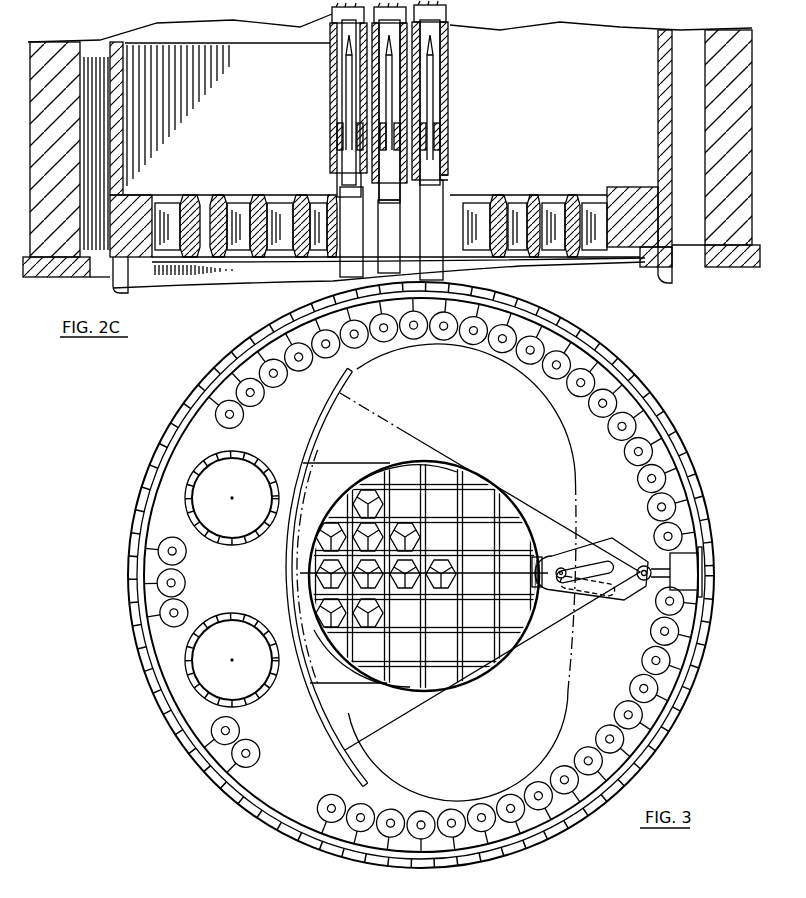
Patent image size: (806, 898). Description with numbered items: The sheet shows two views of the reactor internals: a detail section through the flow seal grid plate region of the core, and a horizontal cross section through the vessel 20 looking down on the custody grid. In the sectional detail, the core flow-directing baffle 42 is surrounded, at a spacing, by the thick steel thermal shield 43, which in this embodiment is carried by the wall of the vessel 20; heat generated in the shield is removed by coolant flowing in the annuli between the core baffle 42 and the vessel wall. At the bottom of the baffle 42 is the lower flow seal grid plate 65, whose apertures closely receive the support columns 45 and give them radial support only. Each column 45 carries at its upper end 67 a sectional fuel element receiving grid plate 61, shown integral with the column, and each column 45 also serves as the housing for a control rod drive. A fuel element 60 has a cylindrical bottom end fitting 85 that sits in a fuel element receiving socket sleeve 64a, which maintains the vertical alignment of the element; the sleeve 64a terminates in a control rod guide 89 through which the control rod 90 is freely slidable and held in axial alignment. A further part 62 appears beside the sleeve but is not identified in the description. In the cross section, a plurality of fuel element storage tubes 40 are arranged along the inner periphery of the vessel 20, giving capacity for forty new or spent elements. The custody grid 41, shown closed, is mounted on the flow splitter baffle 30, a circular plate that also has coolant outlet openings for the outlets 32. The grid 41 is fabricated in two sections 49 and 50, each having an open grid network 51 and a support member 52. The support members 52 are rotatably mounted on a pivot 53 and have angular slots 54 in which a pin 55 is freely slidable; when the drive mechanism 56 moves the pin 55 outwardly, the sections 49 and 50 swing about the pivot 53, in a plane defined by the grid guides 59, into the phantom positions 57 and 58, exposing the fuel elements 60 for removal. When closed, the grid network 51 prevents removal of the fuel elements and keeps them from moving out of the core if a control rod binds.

In FIG. 3, the reactor vessel 20 is at (710, 478).
In FIG. 3, the flow splitter baffle 30 is at (176, 463).
In FIG. 3, the outlets 32 is at (248, 456).
In FIG. 3, the fuel element storage tubes 40 is at (303, 370).
In FIG. 3, the custody grid 41 is at (331, 648).
In FIG. 2C, the core flow-directing baffle 42 is at (120, 157).
In FIG. 2C, the thermal shield 43 is at (391, 143).
In FIG. 2C, the support columns 45 is at (333, 283).
In FIG. 3, the custody grid section 49 is at (338, 506).
In FIG. 3, the custody grid section 50 is at (392, 690).
In FIG. 3, the open grid network 51 is at (437, 491).
In FIG. 3, the support member 52 is at (540, 505).
In FIG. 3, the pivot 53 is at (647, 565).
In FIG. 3, the angular slots 54 is at (588, 563).
In FIG. 3, the pin 55 is at (561, 580).
In FIG. 3, the drive mechanism 56 is at (700, 588).
In FIG. 3, the open position of first grid section 57 is at (466, 517).
In FIG. 3, the open position of second grid section 58 is at (395, 778).
In FIG. 3, the grid guides 59 is at (320, 436).
In FIG. 2C, the fuel element 60 is at (432, 16).
In FIG. 3, the fuel element 60 is at (388, 505).
In FIG. 2C, the sectional grid plate 61 is at (456, 157).
In FIG. 2C, the shoulder 62 is at (450, 180).
In FIG. 2C, the fuel element receiving socket sleeve 64a is at (449, 98).
In FIG. 2C, the lower flow seal grid plate 65 is at (567, 188).
In FIG. 2C, the upper ends of support columns 67 is at (488, 264).
In FIG. 2C, the cylindrical bottom end fitting 85 is at (442, 52).
In FIG. 2C, the control rod guide 89 is at (340, 142).
In FIG. 2C, the control rod 90 is at (347, 113).